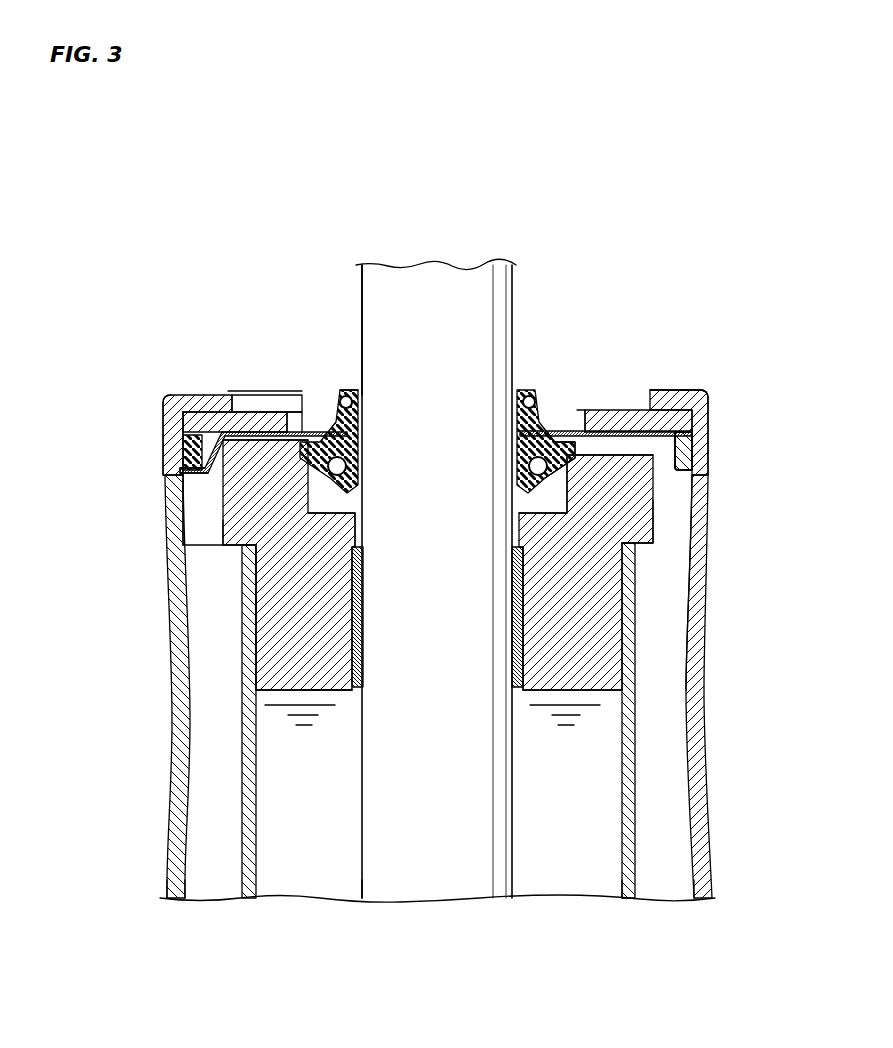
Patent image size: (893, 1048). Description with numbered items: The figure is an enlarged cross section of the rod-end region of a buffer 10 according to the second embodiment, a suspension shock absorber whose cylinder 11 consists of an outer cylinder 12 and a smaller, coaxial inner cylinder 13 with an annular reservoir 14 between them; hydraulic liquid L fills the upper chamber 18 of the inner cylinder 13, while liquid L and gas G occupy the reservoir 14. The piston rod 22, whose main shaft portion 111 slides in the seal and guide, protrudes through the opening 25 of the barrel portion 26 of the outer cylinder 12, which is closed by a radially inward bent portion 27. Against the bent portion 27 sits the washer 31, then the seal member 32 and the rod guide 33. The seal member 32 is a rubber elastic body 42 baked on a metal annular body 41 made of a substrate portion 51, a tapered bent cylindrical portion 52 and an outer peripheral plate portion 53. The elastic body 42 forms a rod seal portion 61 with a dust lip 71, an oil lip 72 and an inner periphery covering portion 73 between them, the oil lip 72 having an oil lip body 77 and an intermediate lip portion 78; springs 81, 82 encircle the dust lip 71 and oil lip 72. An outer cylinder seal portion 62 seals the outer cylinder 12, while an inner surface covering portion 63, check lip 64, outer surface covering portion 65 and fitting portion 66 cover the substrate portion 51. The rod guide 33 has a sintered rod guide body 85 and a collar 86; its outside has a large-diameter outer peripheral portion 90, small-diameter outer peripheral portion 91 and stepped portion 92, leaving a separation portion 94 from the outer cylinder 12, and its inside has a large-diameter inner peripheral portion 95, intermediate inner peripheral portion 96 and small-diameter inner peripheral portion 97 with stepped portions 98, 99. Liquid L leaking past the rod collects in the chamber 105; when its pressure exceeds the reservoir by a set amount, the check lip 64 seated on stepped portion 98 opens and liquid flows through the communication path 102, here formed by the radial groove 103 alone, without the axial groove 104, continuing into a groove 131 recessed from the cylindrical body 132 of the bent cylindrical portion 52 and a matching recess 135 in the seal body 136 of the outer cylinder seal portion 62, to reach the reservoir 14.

The buffer 10 is at (639, 266).
The cylinder 11 is at (164, 882).
The outer cylinder 12 is at (708, 887).
The inner cylinder 13 is at (630, 896).
The reservoir 14 is at (666, 893).
The upper chamber 18 is at (568, 880).
The piston rod 22 is at (360, 881).
The opening 25 is at (230, 398).
The barrel portion 26 is at (177, 899).
The bent portion 27 is at (196, 392).
The washer 31 is at (170, 408).
The seal member 32 is at (355, 384).
The rod guide 33 is at (334, 694).
The annular body 41 is at (191, 486).
The elastic body 42 is at (364, 394).
The substrate portion 51 is at (250, 418).
The bent cylindrical portion 52 is at (190, 450).
The outer peripheral plate portion 53 is at (203, 470).
The rod seal portion 61 is at (532, 394).
The outer cylinder seal portion 62 is at (689, 443).
The inner surface covering portion 63 is at (520, 475).
The check lip 64 is at (552, 455).
The outer surface covering portion 65 is at (553, 410).
The fitting portion 66 is at (578, 410).
The dust lip 71 is at (514, 386).
The oil lip 72 is at (520, 525).
The inner periphery covering portion 73 is at (515, 434).
The oil lip body 77 is at (515, 565).
The intermediate lip portion 78 is at (508, 595).
The spring 81 is at (338, 398).
The spring 82 is at (222, 527).
The rod guide body 85 is at (358, 651).
The collar 86 is at (514, 662).
The large-diameter outer peripheral portion 90 is at (218, 513).
The small-diameter outer peripheral portion 91 is at (243, 612).
The stepped portion 92 is at (232, 545).
The separation portion 94 is at (197, 508).
The large-diameter inner peripheral portion 95 is at (278, 418).
The intermediate inner peripheral portion 96 is at (267, 568).
The small-diameter inner peripheral portion 97 is at (262, 688).
The stepped portion 98 is at (297, 418).
The stepped portion 99 is at (356, 510).
The communication path 102 is at (630, 410).
The radial groove 103 is at (612, 420).
The axial groove 104 is at (652, 490).
The chamber 105 is at (553, 503).
The main shaft portion 111 is at (430, 878).
The groove 131 is at (662, 470).
The cylindrical body 132 is at (166, 392).
The recess 135 is at (673, 390).
The seal body 136 is at (185, 432).
The gas G is at (690, 768).
The hydraulic liquid L is at (597, 800).